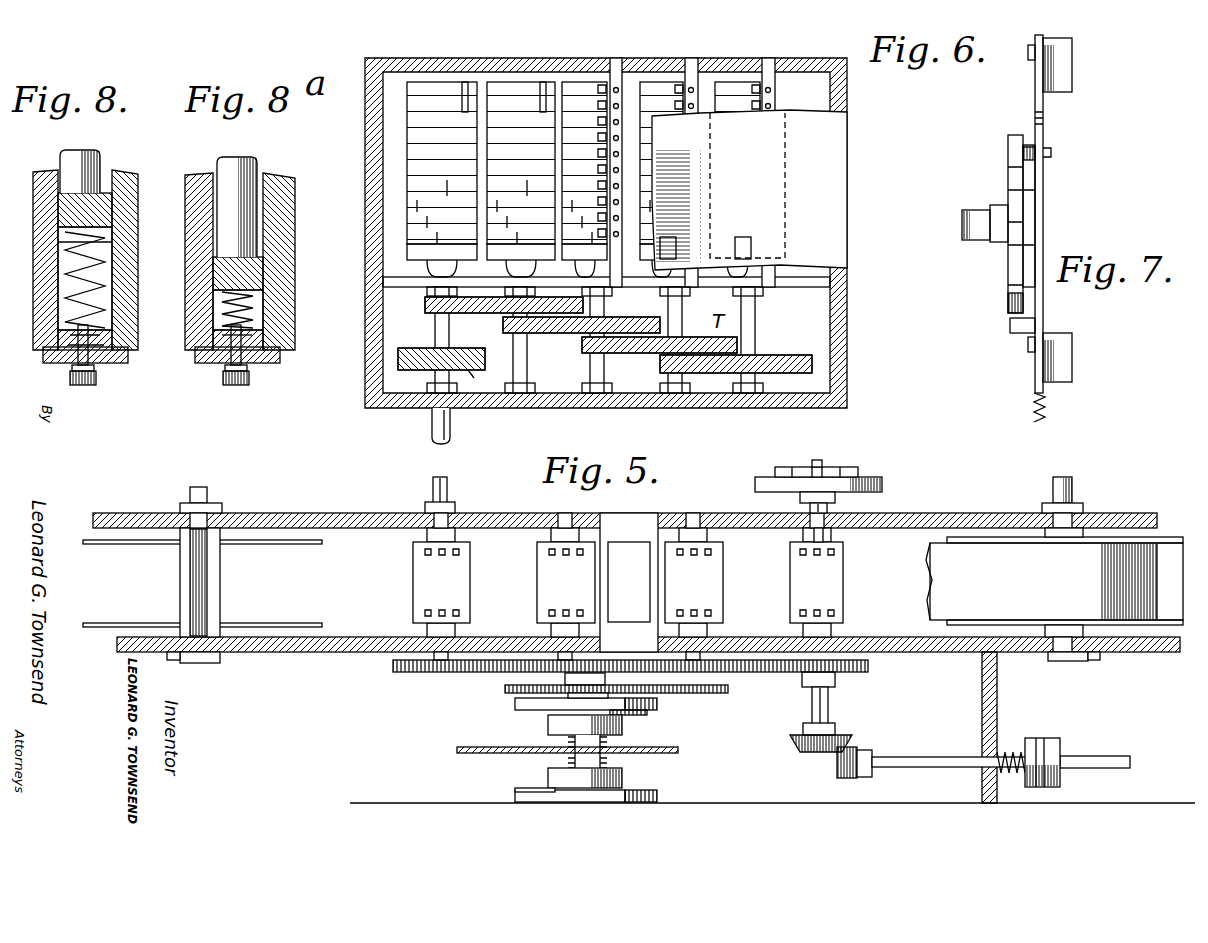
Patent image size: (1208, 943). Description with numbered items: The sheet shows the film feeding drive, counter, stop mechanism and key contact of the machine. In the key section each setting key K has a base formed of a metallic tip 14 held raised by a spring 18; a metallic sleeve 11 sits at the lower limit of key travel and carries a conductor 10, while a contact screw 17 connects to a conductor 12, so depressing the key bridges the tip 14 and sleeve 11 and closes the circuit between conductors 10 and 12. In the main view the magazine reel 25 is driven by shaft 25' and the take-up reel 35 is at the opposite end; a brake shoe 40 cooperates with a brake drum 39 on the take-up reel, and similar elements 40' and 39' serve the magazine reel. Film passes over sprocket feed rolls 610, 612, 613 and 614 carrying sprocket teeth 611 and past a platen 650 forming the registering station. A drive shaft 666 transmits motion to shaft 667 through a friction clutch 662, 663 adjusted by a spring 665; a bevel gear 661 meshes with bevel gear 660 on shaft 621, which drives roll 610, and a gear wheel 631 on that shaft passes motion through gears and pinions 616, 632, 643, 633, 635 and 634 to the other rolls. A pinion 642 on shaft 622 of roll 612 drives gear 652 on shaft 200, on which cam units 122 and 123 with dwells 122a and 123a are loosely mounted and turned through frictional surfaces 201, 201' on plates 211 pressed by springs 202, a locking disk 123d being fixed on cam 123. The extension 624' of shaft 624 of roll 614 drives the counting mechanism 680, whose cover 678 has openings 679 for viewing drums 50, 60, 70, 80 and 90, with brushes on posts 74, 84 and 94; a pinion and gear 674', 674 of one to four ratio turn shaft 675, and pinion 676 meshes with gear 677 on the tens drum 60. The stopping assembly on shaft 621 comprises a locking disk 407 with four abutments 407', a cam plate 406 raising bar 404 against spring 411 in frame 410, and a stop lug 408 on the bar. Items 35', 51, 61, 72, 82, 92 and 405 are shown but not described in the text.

In FIG. 8, the key K is at (100, 156).
In FIG. 8A, the key K is at (257, 160).
In FIG. 8, the metallic tip 14 is at (125, 178).
In FIG. 8A, the metallic tip 14 is at (285, 248).
In FIG. 8, the metallic sleeve 11 is at (110, 273).
In FIG. 8A, the metallic sleeve 11 is at (268, 270).
In FIG. 8, the spring 18 is at (100, 300).
In FIG. 8A, the spring 18 is at (255, 300).
In FIG. 8, the conductor 12 is at (112, 363).
In FIG. 8A, the conductor 12 is at (263, 363).
In FIG. 8, the conductor 10 is at (128, 350).
In FIG. 8A, the conductor 10 is at (280, 350).
In FIG. 8, the contact screw 17 is at (81, 385).
In FIG. 8A, the contact screw 17 is at (233, 385).
In FIG. 6, the counting drum 50 is at (440, 82).
In FIG. 6, the stop 51 is at (462, 90).
In FIG. 6, the tens drum 60 is at (528, 82).
In FIG. 6, the stop 61 is at (540, 90).
In FIG. 6, the counting drum 70 is at (586, 82).
In FIG. 6, the stop blocks 72 is at (598, 108).
In FIG. 6, the post 74 is at (616, 62).
In FIG. 6, the counting drum 80 is at (662, 82).
In FIG. 6, the stop blocks 82 is at (679, 110).
In FIG. 6, the post 84 is at (696, 66).
In FIG. 6, the counting drum 90 is at (740, 82).
In FIG. 6, the stop blocks 92 is at (750, 110).
In FIG. 6, the post 94 is at (775, 66).
In FIG. 6, the cover 678 is at (749, 190).
In FIG. 6, the openings 679 is at (676, 245).
In FIG. 6, the counting mechanism 680 is at (850, 348).
In FIG. 6, the pinion 676 is at (425, 305).
In FIG. 6, the gear 677 is at (503, 322).
In FIG. 6, the shaft 675 is at (437, 334).
In FIG. 6, the gear 674 is at (445, 347).
In FIG. 6, the pinion 674' is at (487, 382).
In FIG. 6, the shaft extension 624' is at (468, 426).
In FIG. 7, the bar 404 is at (1044, 240).
In FIG. 5, the bar 404 is at (838, 440).
In FIG. 7, the nut 405 is at (1032, 152).
In FIG. 5, the nut 405 is at (810, 466).
In FIG. 7, the cam plate 406 is at (1028, 212).
In FIG. 5, the cam plate 406 is at (838, 468).
In FIG. 7, the locking disk 407 is at (992, 241).
In FIG. 5, the locking disk 407 is at (824, 493).
In FIG. 5, the stop abutments 407' is at (916, 481).
In FIG. 7, the stop lug 408 is at (1010, 330).
In FIG. 7, the machine frame 410 is at (1072, 80).
In FIG. 7, the spring 411 is at (1046, 408).
In FIG. 7, the shaft 621 is at (975, 212).
In FIG. 5, the shaft 621 is at (835, 522).
In FIG. 5, the magazine reel 25 is at (1056, 581).
In FIG. 5, the shaft 25' is at (1079, 564).
In FIG. 5, the take-up reel 35 is at (202, 582).
In FIG. 5, the shaft 35' is at (217, 506).
In FIG. 5, the brake drum 39 is at (221, 664).
In FIG. 5, the brake drum 39' is at (1064, 673).
In FIG. 5, the brake shoe 40 is at (171, 670).
In FIG. 5, the brake shoe 40' is at (1112, 664).
In FIG. 5, the shaft 624 is at (410, 517).
In FIG. 5, the sprocket feed roll 614 is at (421, 590).
In FIG. 5, the sprocket feed roll 613 is at (545, 587).
In FIG. 5, the sprocket feed roll 612 is at (723, 575).
In FIG. 5, the sprocket feed roll 610 is at (845, 585).
In FIG. 5, the sprocket teeth 611 is at (563, 605).
In FIG. 5, the platen 650 is at (632, 521).
In FIG. 5, the shaft 622 is at (775, 525).
In FIG. 5, the gear 634 is at (392, 667).
In FIG. 5, the gear wheel 631 is at (868, 670).
In FIG. 5, the gear 633 is at (520, 652).
In FIG. 5, the gear 643 is at (608, 660).
In FIG. 5, the gear 616 is at (762, 673).
In FIG. 5, the gear 632 is at (735, 680).
In FIG. 5, the gear 652 is at (505, 690).
In FIG. 5, the gear 635 is at (500, 673).
In FIG. 5, the pinion 642 is at (700, 693).
In FIG. 5, the cam unit 122 is at (520, 706).
In FIG. 5, the dwell 122a is at (545, 713).
In FIG. 5, the frictional surface 201 is at (610, 727).
In FIG. 5, the frictional surface 201' is at (612, 776).
In FIG. 5, the plates 211 is at (608, 738).
In FIG. 5, the shaft 200 is at (630, 742).
In FIG. 5, the springs 202 is at (575, 742).
In FIG. 5, the cam unit 123 is at (518, 794).
In FIG. 5, the locking disk 123d is at (530, 790).
In FIG. 5, the dwell 123a is at (657, 796).
In FIG. 5, the bevel gear 660 is at (842, 743).
In FIG. 5, the bevel gear 661 is at (850, 777).
In FIG. 5, the shaft 667 is at (935, 752).
In FIG. 5, the drive shaft 666 is at (1105, 756).
In FIG. 5, the spring 665 is at (1020, 775).
In FIG. 5, the friction clutch 662 is at (1035, 738).
In FIG. 5, the friction clutch 663 is at (1058, 740).